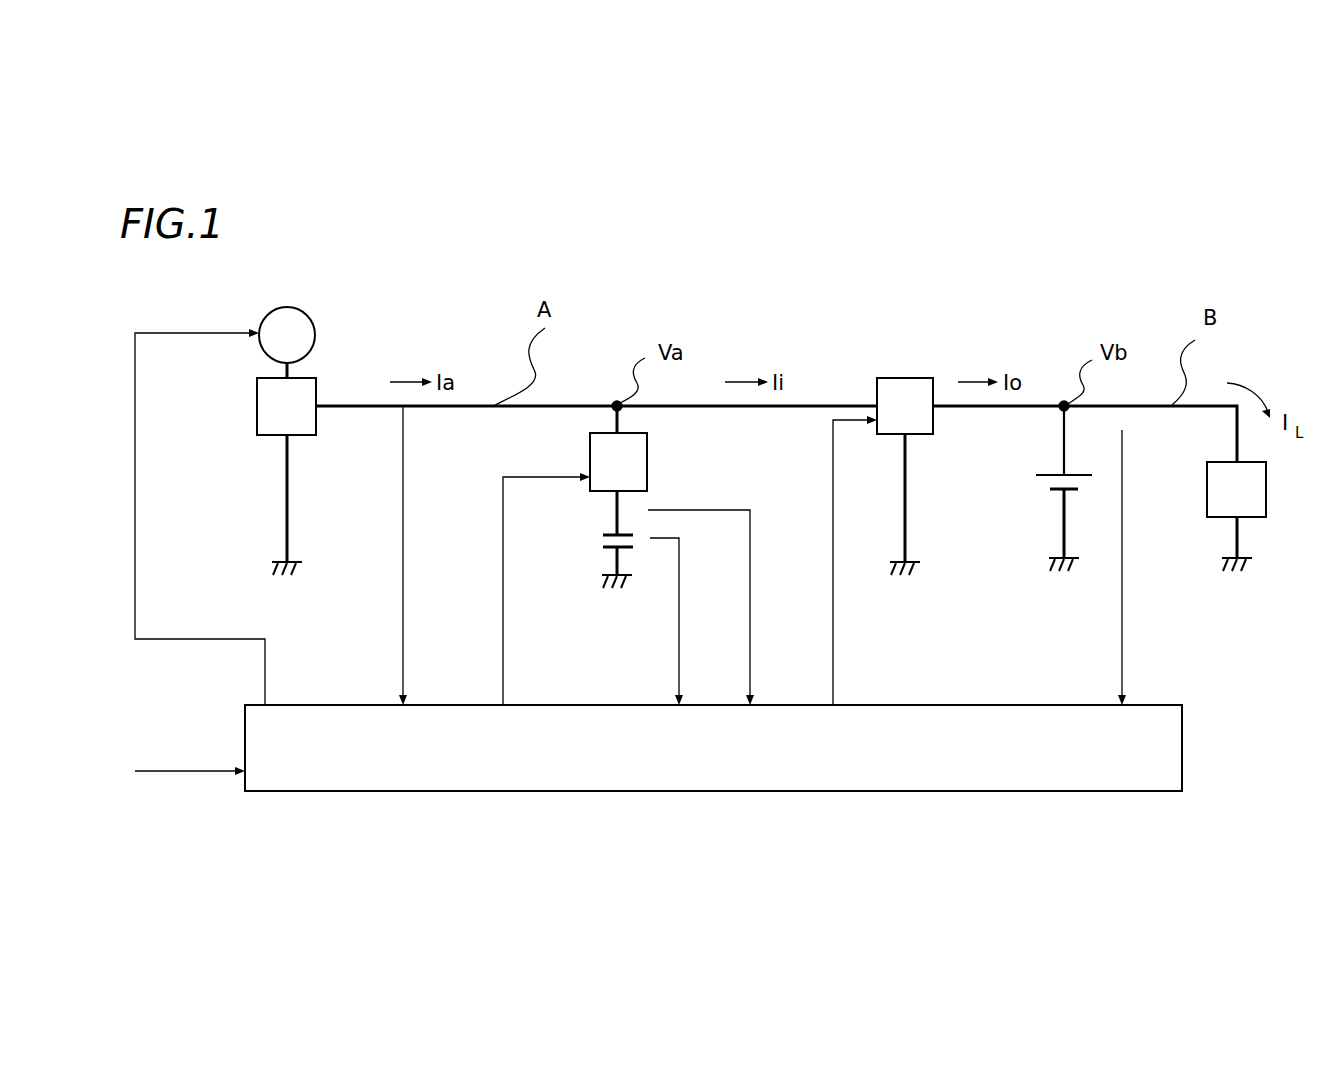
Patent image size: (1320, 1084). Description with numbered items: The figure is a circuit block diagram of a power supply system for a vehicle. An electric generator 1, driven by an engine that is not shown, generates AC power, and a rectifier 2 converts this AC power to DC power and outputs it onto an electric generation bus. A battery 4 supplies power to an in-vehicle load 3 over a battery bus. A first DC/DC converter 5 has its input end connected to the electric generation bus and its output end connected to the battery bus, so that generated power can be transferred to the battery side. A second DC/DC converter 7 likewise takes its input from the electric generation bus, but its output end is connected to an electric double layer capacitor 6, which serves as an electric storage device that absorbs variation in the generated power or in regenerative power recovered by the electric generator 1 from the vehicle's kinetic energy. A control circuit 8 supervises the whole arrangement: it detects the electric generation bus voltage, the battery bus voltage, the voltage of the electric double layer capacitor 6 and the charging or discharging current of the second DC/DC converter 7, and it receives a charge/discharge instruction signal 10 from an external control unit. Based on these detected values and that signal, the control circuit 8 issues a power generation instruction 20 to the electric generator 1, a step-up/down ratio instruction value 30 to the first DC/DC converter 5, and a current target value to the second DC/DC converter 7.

The electric generator 1 is at (312, 329).
The rectifier 2 is at (257, 412).
The in-vehicle load 3 is at (1207, 495).
The battery 4 is at (1030, 495).
The first DC/DC converter 5 is at (920, 377).
The electric double layer capacitor 6 is at (603, 545).
The second DC/DC converter 7 is at (590, 445).
The control circuit 8 is at (1182, 745).
The charge/discharge instruction signal 10 is at (207, 773).
The power generation instruction 20 is at (268, 728).
The step-up/down ratio instruction value 30 is at (850, 578).